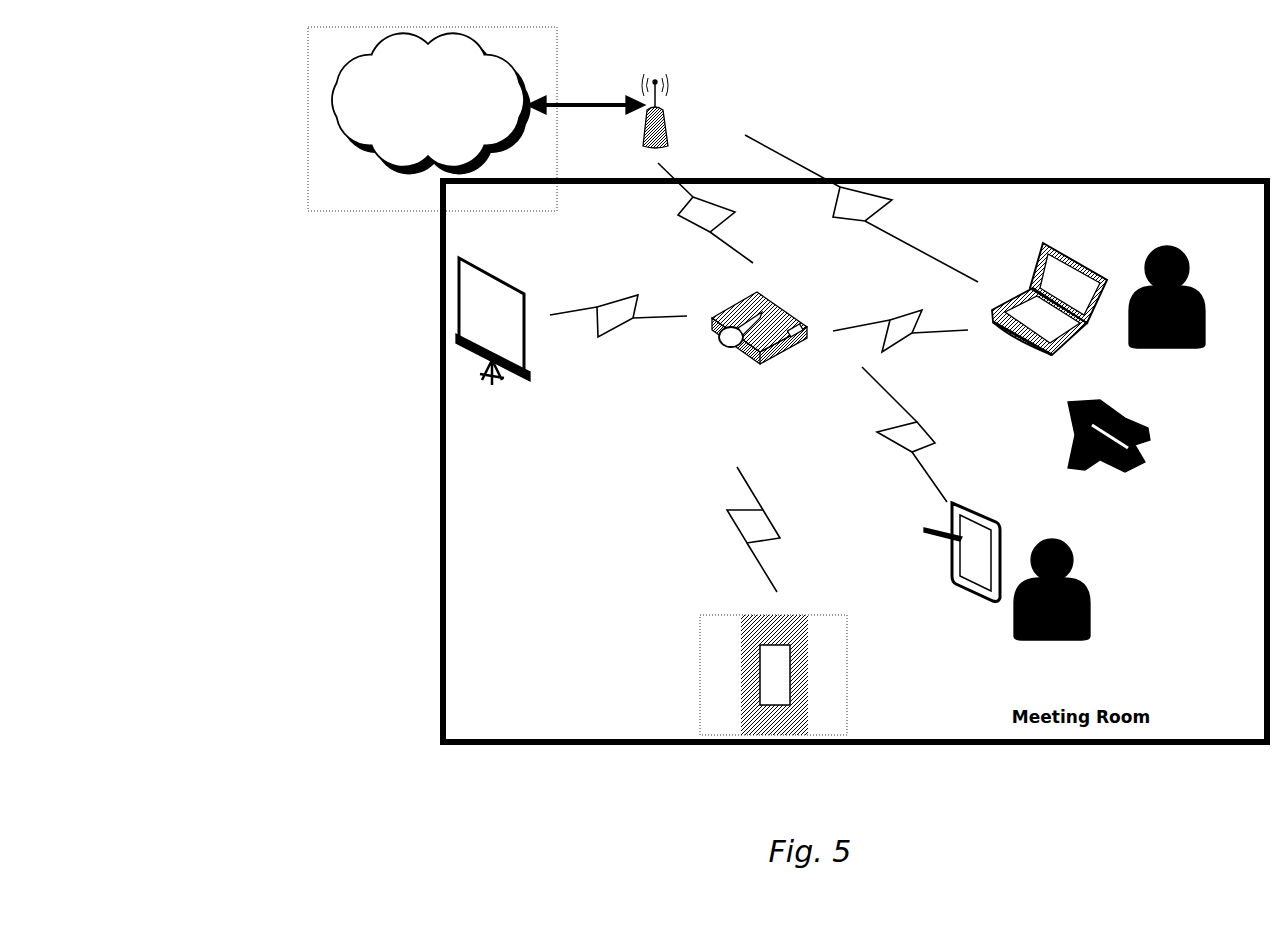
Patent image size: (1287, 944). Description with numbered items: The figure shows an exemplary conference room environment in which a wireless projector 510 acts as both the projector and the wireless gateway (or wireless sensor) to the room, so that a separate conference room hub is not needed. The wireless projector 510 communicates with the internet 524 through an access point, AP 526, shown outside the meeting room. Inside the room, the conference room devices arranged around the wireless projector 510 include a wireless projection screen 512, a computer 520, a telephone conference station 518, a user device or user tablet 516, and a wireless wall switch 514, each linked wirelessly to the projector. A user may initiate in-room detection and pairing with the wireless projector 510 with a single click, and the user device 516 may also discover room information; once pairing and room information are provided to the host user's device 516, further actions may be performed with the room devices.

The wireless projector 510 is at (785, 322).
The wireless projection screen 512 is at (527, 305).
The wireless wall switch 514 is at (742, 653).
The user device 516 is at (1001, 548).
The telephone conference station 518 is at (1132, 412).
The computer 520 is at (1052, 246).
The internet 524 is at (332, 110).
The AP 526 is at (664, 126).